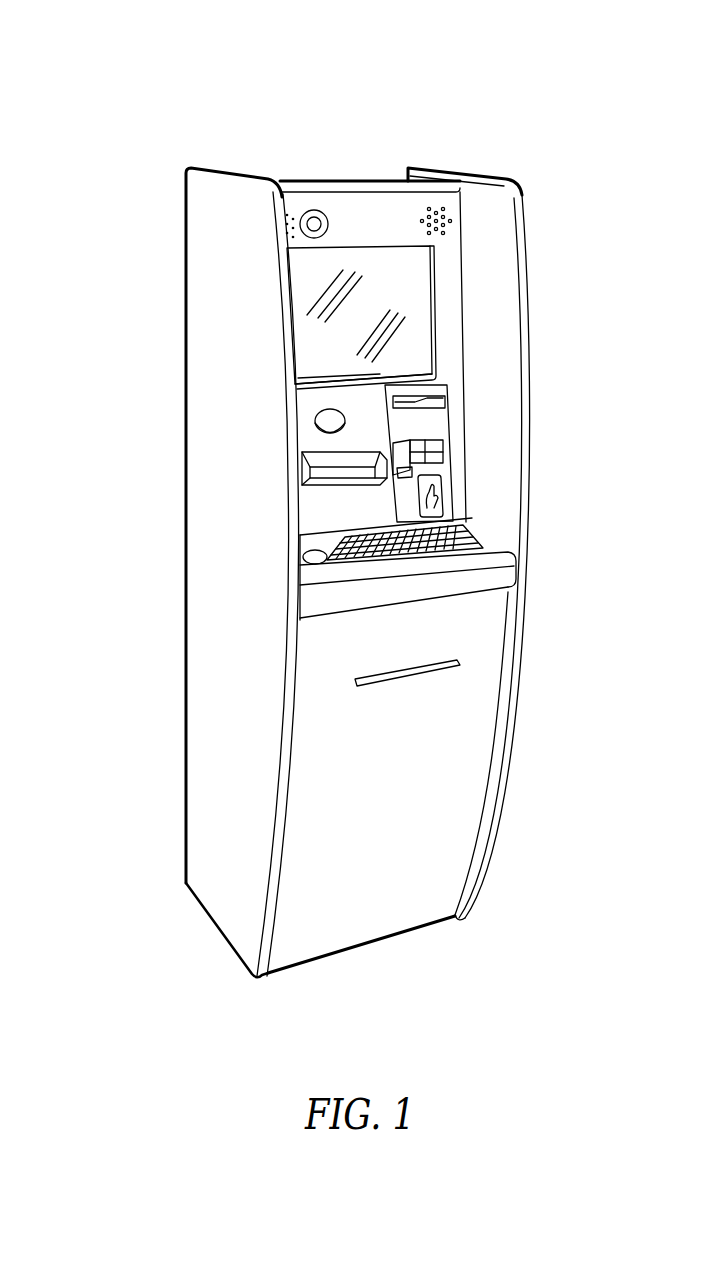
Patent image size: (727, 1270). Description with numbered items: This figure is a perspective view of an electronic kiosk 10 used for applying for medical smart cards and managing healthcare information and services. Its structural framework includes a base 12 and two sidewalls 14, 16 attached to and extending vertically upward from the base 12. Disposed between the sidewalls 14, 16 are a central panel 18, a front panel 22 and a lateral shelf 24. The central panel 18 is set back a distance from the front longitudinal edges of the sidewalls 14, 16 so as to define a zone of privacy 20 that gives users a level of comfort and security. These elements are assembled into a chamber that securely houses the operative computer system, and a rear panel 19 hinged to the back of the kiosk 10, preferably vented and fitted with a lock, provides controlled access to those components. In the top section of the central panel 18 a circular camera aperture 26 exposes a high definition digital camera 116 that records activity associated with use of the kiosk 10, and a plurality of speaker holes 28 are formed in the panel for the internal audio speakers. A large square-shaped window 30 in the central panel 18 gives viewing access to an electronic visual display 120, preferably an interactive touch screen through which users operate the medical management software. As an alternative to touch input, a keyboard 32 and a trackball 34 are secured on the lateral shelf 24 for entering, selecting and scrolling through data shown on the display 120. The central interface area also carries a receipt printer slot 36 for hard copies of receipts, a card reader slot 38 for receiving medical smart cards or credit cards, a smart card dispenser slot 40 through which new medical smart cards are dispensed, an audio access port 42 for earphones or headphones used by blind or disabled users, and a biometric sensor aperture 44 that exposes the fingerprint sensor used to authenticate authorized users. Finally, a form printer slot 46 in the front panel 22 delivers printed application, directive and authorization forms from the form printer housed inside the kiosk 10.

The electronic kiosk 10 is at (184, 81).
The base 12 is at (313, 958).
The sidewall 14 is at (207, 201).
The sidewall 16 is at (476, 172).
The central panel 18 is at (342, 515).
The rear panel 19 is at (158, 593).
The zone of privacy 20 is at (483, 276).
The front panel 22 is at (400, 878).
The lateral shelf 24 is at (328, 603).
The camera aperture 26 is at (313, 222).
The speaker holes 28 is at (440, 218).
The window 30 is at (433, 330).
The keyboard 32 is at (440, 538).
The trackball 34 is at (307, 557).
The receipt printer slot 36 is at (450, 400).
The card reader slot 38 is at (445, 448).
The smart card dispenser slot 40 is at (337, 472).
The audio access port 42 is at (435, 492).
The biometric sensor aperture 44 is at (330, 415).
The form printer slot 46 is at (417, 670).
The high definition digital camera 116 is at (308, 210).
The electronic visual display 120 is at (313, 282).